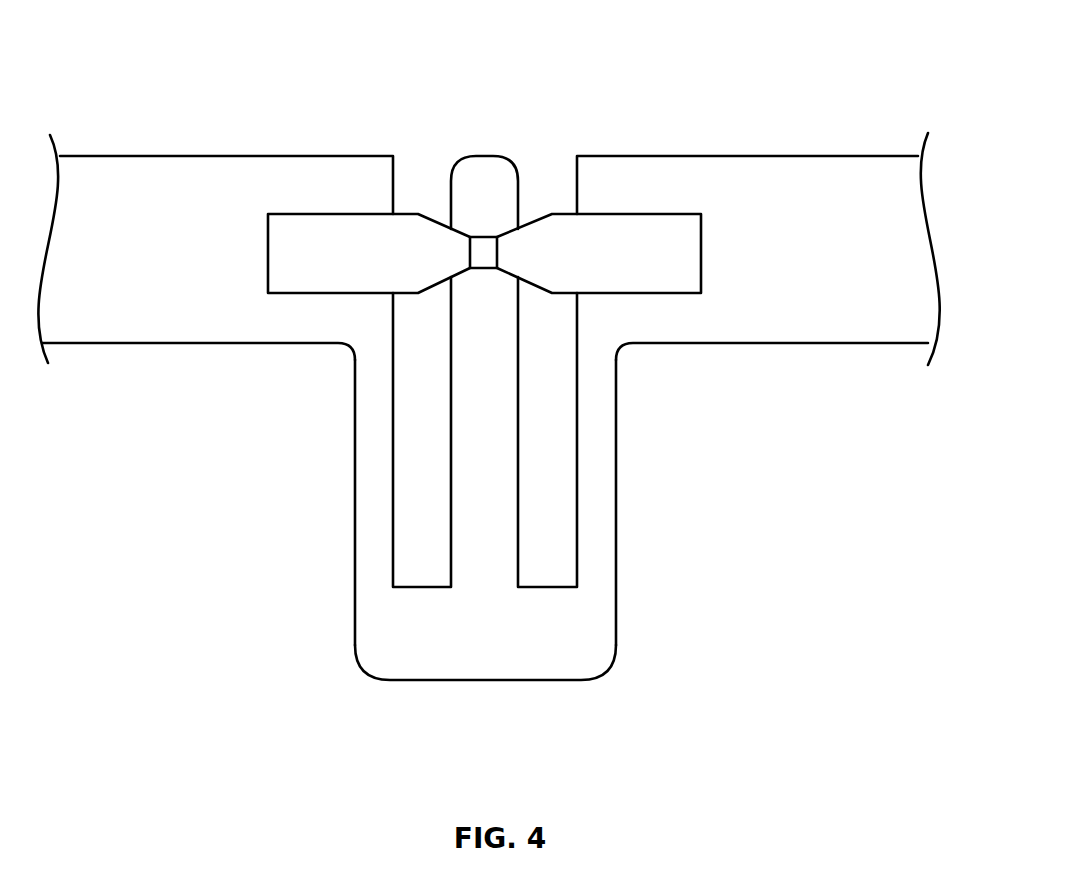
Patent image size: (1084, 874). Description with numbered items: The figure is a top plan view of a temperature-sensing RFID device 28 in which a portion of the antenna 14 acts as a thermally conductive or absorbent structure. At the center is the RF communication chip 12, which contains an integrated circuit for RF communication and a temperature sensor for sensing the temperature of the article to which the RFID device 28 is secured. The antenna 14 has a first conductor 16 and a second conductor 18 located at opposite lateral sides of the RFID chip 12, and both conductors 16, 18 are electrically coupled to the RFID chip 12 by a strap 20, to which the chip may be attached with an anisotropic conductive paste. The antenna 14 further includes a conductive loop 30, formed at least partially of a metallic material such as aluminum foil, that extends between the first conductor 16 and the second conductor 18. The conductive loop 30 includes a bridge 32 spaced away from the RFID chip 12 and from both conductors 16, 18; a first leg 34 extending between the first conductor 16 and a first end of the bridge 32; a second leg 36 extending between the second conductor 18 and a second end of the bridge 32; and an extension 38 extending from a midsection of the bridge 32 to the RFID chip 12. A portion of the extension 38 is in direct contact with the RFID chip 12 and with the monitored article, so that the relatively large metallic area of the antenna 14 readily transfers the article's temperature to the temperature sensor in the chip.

The RF communication chip 12 is at (484, 248).
The antenna 14 is at (108, 157).
The first conductor 16 is at (120, 320).
The second conductor 18 is at (860, 183).
The strap 20 is at (318, 228).
The RFID device 28 is at (488, 387).
The conductive loop 30 is at (474, 555).
The bridge 32 is at (483, 668).
The first leg 34 is at (355, 448).
The second leg 36 is at (607, 553).
The extension 38 is at (500, 462).